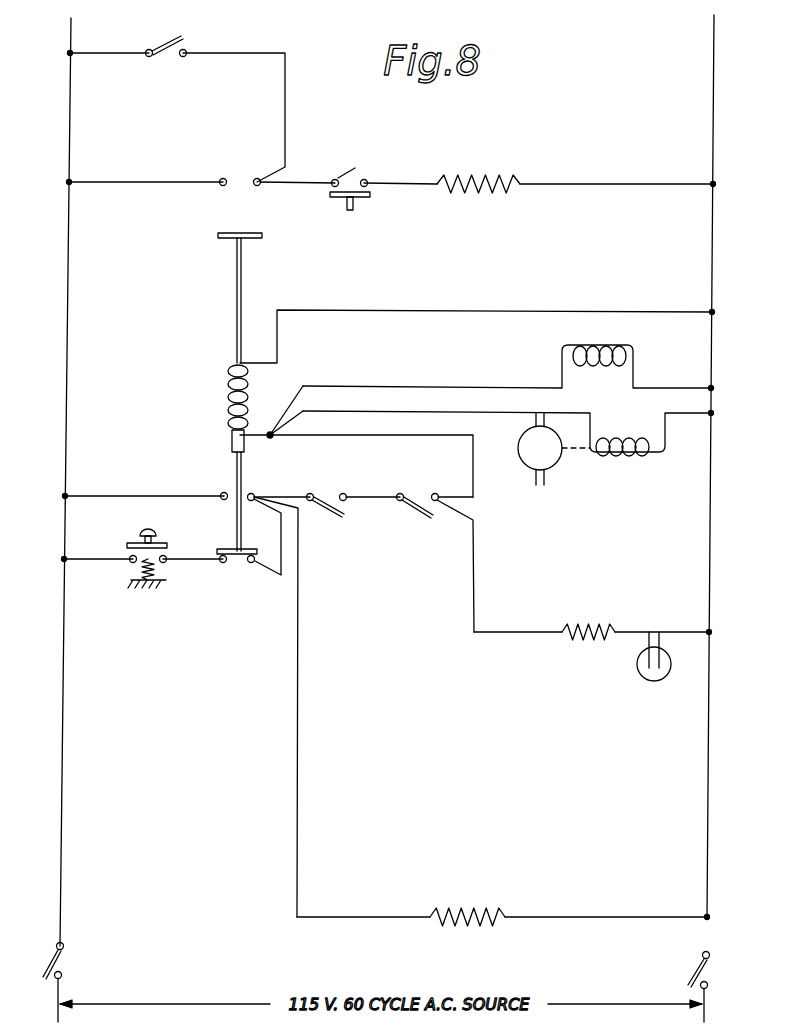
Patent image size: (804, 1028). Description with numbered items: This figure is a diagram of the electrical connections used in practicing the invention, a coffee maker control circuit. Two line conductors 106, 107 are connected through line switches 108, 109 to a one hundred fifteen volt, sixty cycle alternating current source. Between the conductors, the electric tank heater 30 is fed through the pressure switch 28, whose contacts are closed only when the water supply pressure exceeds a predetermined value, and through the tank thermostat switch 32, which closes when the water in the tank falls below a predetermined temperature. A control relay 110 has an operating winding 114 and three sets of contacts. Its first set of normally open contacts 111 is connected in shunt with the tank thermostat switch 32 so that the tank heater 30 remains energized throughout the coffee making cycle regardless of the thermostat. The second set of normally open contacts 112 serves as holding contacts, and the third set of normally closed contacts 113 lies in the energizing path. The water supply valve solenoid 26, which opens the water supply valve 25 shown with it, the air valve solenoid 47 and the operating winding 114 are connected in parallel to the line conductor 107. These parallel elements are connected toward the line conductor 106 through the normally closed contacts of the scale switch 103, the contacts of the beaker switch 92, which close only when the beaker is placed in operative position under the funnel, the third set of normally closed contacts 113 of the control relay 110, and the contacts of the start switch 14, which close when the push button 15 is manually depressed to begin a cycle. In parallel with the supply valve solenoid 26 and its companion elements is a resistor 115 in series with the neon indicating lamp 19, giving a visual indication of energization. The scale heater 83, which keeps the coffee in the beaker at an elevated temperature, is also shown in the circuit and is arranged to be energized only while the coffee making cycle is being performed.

The tank thermostat switch 32 is at (184, 46).
The first set of normally open contacts 111 is at (235, 186).
The pressure switch 28 is at (350, 178).
The electric tank heater 30 is at (480, 176).
The control relay 110 is at (202, 303).
The operating winding 114 is at (228, 401).
The air valve solenoid 47 is at (604, 348).
The water supply valve solenoid 26 is at (619, 444).
The water supply valve 25 is at (525, 480).
The second set of normally open contacts 112 is at (252, 492).
The beaker switch 92 is at (329, 493).
The scale switch 103 is at (423, 493).
The start switch 14 is at (171, 537).
The push button 15 is at (141, 532).
The third set of normally closed contacts 113 is at (237, 568).
The resistor 115 is at (584, 624).
The neon indicating lamp 19 is at (652, 683).
The scale heater 83 is at (468, 905).
The line conductor 106 is at (61, 888).
The line conductor 107 is at (710, 866).
The line switch 108 is at (64, 963).
The line switch 109 is at (708, 975).